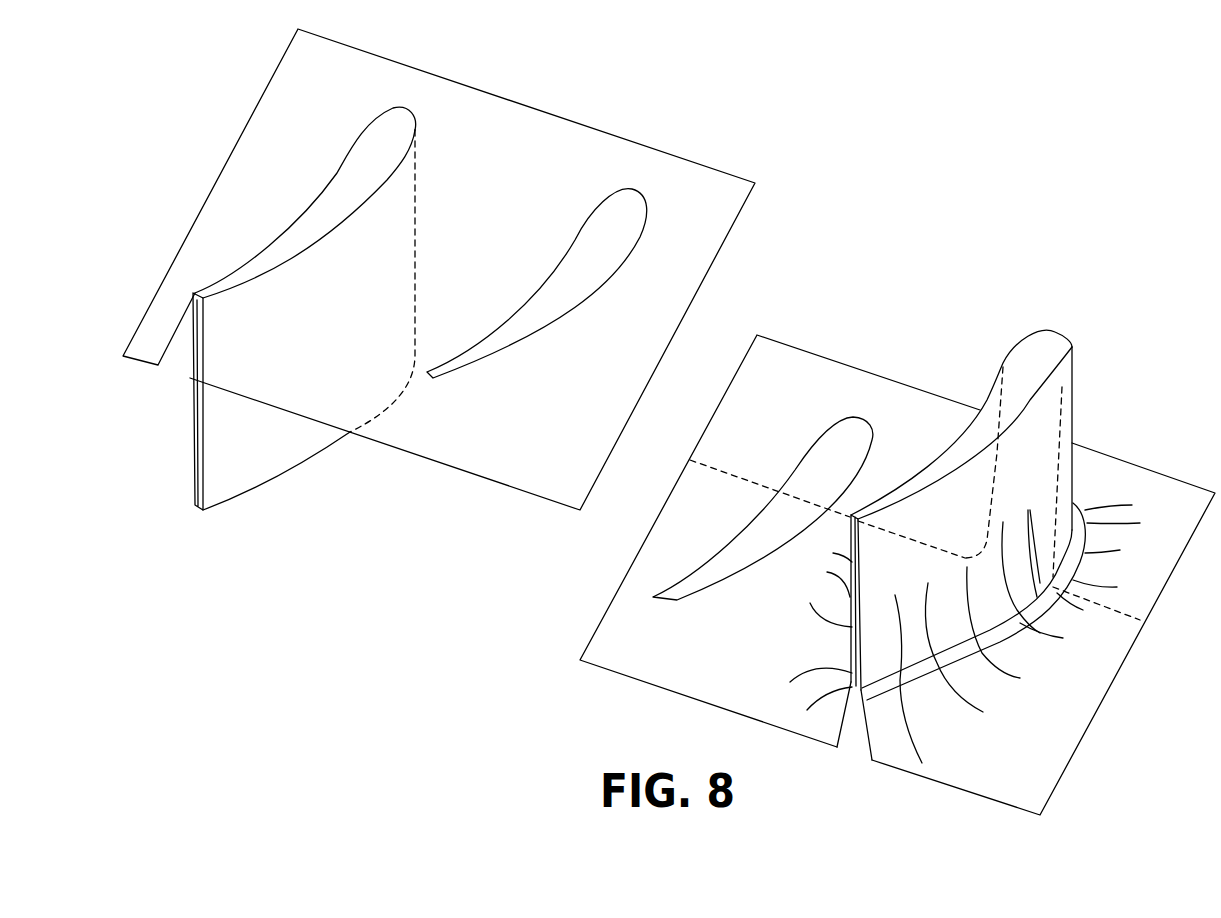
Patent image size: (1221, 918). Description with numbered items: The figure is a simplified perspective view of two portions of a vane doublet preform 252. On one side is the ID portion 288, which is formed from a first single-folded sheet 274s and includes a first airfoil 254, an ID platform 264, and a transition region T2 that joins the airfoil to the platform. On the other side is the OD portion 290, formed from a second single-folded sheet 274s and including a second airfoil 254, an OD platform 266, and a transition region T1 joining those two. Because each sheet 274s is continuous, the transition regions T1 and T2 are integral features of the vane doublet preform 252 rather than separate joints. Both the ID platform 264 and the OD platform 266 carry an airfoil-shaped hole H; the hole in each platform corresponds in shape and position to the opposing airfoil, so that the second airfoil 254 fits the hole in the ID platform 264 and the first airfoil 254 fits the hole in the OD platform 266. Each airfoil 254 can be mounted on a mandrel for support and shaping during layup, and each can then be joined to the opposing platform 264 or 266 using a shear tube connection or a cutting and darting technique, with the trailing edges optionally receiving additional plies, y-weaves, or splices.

The vane doublet preform 252 is at (836, 172).
The airfoil 254 is at (632, 433).
The ID platform 264 is at (855, 360).
The OD platform 266 is at (207, 247).
The single-folded sheet 274s is at (362, 445).
The ID portion 288 is at (919, 332).
The OD portion 290 is at (494, 530).
The transition region T1 is at (337, 168).
The transition region T2 is at (710, 273).
The airfoil-shaped hole H is at (583, 268).